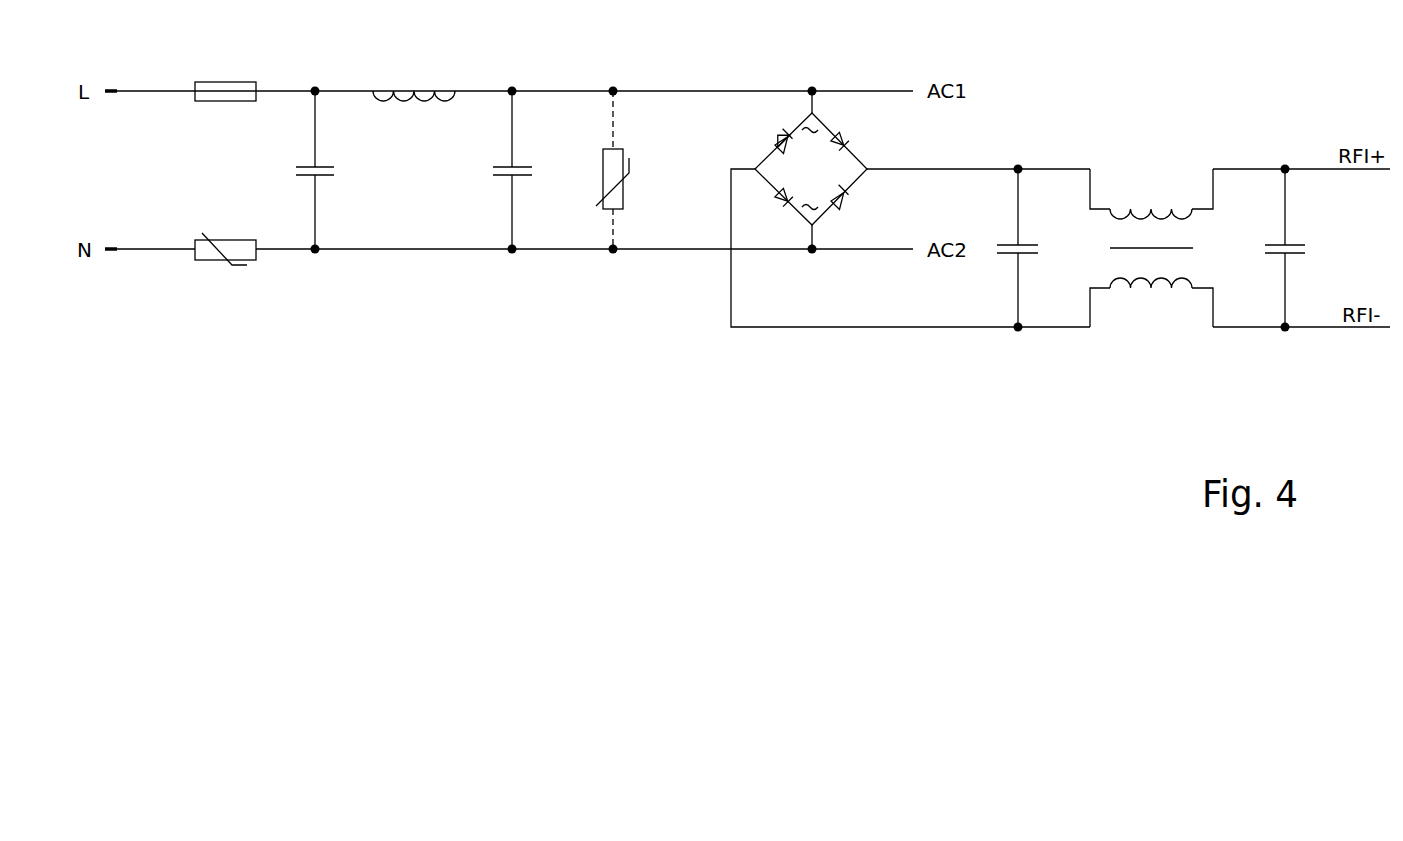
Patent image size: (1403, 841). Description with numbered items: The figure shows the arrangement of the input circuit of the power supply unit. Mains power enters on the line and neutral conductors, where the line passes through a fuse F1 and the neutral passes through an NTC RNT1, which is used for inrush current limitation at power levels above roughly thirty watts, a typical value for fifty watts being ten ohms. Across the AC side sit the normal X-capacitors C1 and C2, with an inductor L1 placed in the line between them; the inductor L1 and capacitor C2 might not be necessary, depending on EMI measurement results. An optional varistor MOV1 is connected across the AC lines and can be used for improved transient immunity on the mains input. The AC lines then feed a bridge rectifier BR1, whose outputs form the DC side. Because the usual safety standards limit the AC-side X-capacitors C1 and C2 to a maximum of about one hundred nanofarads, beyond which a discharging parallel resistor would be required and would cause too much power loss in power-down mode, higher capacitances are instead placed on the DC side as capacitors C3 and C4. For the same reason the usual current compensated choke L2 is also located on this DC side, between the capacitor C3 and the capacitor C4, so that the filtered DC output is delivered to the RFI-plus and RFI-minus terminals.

The fuse F1 is at (225, 78).
The NTC RNT1 is at (225, 239).
The X-capacitor C1 is at (325, 170).
The inductor L1 is at (414, 83).
The X-capacitor C2 is at (522, 170).
The varistor MOV1 is at (645, 170).
The bridge rectifier BR1 is at (831, 170).
The DC-side capacitor C3 is at (1027, 248).
The current compensated choke L2 is at (1158, 248).
The DC-side capacitor C4 is at (1294, 248).